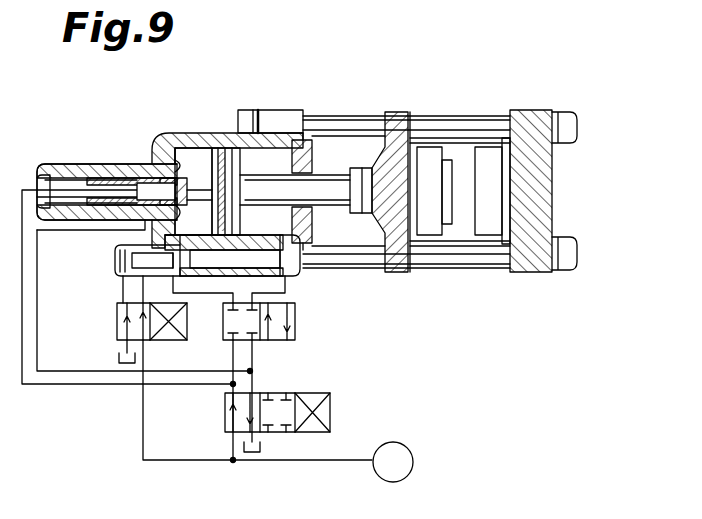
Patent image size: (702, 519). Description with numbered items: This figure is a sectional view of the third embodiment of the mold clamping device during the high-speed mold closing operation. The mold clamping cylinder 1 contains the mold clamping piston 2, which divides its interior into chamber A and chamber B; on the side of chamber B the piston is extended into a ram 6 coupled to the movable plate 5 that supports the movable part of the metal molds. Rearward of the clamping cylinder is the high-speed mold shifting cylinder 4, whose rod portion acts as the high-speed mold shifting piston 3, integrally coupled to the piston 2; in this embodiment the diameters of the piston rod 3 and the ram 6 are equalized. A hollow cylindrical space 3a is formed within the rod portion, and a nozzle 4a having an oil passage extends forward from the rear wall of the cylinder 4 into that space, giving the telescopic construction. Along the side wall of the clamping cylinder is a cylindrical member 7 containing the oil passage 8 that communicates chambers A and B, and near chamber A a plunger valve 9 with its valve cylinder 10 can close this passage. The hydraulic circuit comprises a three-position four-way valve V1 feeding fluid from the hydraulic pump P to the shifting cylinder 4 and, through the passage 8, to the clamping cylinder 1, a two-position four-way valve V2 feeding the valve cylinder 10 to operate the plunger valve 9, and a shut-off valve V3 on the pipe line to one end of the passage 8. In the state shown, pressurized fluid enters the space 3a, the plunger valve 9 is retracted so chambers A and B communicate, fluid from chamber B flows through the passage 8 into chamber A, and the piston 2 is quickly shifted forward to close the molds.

The mold clamping cylinder 1 is at (173, 133).
The mold clamping piston 2 is at (220, 150).
The high-speed mold shifting piston 3 is at (118, 163).
The hollow cylindrical space 3a is at (145, 163).
The high-speed mold shifting cylinder 4 is at (75, 163).
The nozzle 4a is at (53, 163).
The movable plate 5 is at (397, 150).
The ram 6 is at (333, 188).
The cylindrical member 7 is at (298, 263).
The oil passage 8 is at (273, 260).
The plunger valve 9 is at (133, 279).
The valve cylinder 10 is at (117, 234).
The chamber A is at (197, 157).
The chamber B is at (270, 157).
The three-position four-way valve V1 is at (332, 414).
The two-position four-way valve V2 is at (117, 324).
The shut-off valve V3 is at (295, 336).
The hydraulic pump P is at (393, 462).